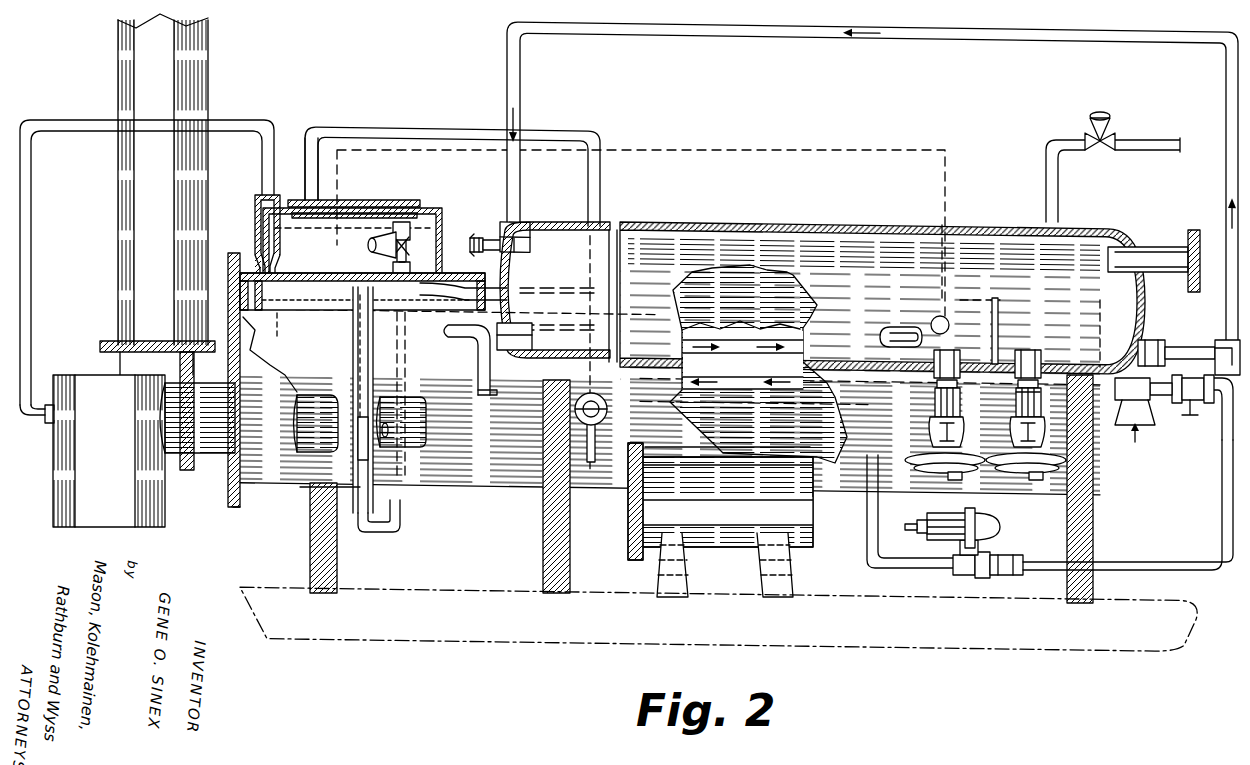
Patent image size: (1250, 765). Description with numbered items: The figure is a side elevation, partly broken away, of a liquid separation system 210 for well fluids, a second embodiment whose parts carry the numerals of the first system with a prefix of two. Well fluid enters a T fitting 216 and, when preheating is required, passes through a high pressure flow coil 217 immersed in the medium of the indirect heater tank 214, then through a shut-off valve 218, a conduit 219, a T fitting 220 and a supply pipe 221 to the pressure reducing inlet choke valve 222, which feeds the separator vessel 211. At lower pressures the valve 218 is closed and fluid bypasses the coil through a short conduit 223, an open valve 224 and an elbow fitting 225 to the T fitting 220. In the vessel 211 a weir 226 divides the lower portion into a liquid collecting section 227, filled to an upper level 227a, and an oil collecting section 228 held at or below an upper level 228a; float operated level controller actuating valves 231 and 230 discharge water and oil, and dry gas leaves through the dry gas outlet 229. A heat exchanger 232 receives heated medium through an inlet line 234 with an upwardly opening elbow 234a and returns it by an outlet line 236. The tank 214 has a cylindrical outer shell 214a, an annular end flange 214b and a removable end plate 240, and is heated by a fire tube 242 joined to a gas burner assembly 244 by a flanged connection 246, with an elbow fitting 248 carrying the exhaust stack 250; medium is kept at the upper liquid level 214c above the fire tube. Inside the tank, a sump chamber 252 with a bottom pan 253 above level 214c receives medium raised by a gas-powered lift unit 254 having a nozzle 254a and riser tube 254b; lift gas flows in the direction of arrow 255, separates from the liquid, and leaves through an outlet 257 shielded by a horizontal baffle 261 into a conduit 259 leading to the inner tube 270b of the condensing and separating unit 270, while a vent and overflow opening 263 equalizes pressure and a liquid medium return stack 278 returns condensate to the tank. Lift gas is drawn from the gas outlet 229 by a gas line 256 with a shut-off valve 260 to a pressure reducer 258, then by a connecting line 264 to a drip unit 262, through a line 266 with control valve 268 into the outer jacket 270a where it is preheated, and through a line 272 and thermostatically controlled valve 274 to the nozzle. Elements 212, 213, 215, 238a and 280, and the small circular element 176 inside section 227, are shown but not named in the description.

The pipe 176 is at (946, 331).
The liquid separation system 210 is at (854, 680).
The separator vessel 211 is at (800, 204).
The frame 212 is at (845, 578).
The support legs 213 is at (545, 557).
The indirect heater tank 214 is at (507, 493).
The cylindrical outer shell 214a is at (312, 506).
The annular end flange 214b is at (235, 507).
The upper liquid level 214c is at (297, 322).
The support leg 215 is at (310, 562).
The T fitting 216 is at (1141, 407).
The high pressure flow coil 217 is at (741, 365).
The shut-off valve 218 is at (1145, 340).
The conduit 219 is at (1188, 349).
The T fitting 220 is at (1220, 340).
The supply pipe 221 is at (874, 26).
The pressure reducing inlet choke valve 222 is at (470, 238).
The short conduit 223 is at (1152, 404).
The valve 224 is at (1197, 412).
The elbow fitting 225 is at (1198, 400).
The weir 226 is at (999, 314).
The liquid collecting section 227 is at (888, 302).
The upper level 227a is at (962, 298).
The oil collecting section 228 is at (1040, 350).
The upper level 228a is at (1084, 330).
The dry gas outlet 229 is at (1190, 232).
The float operated level controller actuating valve 230 is at (1040, 366).
The float operated level controller actuating valve 231 is at (926, 420).
The heat exchanger 232 is at (897, 330).
The inlet line 234 is at (460, 340).
The upwardly opening elbow 234a is at (420, 397).
The outlet line 236 is at (530, 351).
The pipe 238a is at (482, 388).
The end plate 240 is at (228, 494).
The fire tube 242 is at (306, 396).
The gas burner assembly 244 is at (56, 464).
The flanged connection 246 is at (190, 472).
The elbow fitting 248 is at (118, 352).
The exhaust stack 250 is at (118, 100).
The sump chamber 252 is at (362, 281).
The bottom pan 253 is at (296, 313).
The gas-powered lift unit 254 is at (334, 400).
The nozzle 254a is at (355, 448).
The riser tube 254b is at (356, 330).
The arrow 255 is at (390, 272).
The gas line 256 is at (1146, 144).
The outlet 257 is at (462, 286).
The pressure reducer 258 is at (995, 520).
The conduit 259 is at (425, 232).
The shut-off valve 260 is at (1106, 138).
The horizontal baffle 261 is at (401, 244).
The drip unit 262 is at (701, 549).
The vent and overflow opening 263 is at (508, 292).
The connecting line 264 is at (887, 564).
The line 266 is at (479, 124).
The control valve 268 is at (608, 412).
The condensing and separating unit 270 is at (352, 209).
The outer jacket 270a is at (396, 200).
The inner tube 270b is at (322, 249).
The line 272 is at (365, 533).
The thermostatically controlled valve 274 is at (371, 242).
The liquid medium return stack 278 is at (255, 218).
The air line 280 is at (268, 112).